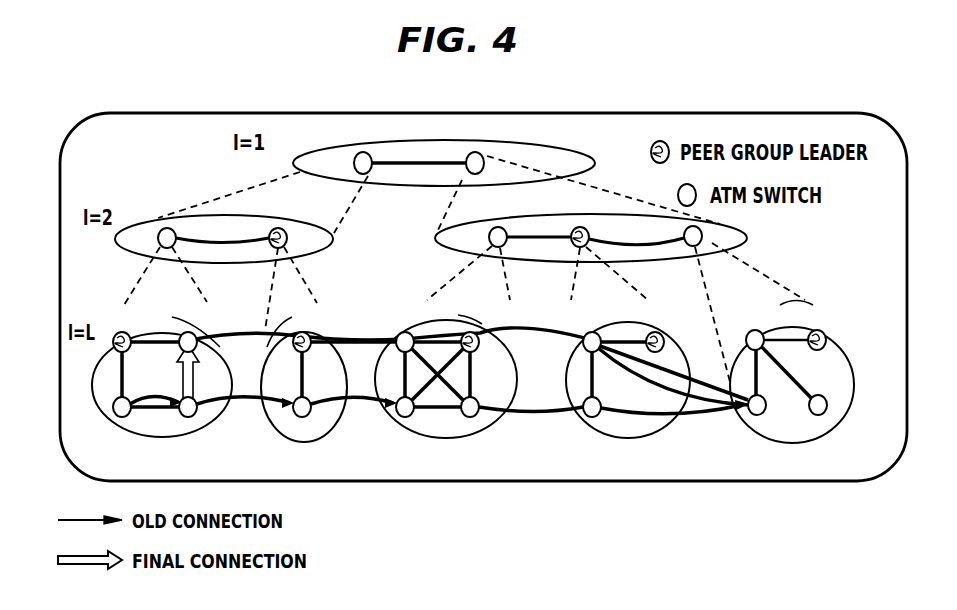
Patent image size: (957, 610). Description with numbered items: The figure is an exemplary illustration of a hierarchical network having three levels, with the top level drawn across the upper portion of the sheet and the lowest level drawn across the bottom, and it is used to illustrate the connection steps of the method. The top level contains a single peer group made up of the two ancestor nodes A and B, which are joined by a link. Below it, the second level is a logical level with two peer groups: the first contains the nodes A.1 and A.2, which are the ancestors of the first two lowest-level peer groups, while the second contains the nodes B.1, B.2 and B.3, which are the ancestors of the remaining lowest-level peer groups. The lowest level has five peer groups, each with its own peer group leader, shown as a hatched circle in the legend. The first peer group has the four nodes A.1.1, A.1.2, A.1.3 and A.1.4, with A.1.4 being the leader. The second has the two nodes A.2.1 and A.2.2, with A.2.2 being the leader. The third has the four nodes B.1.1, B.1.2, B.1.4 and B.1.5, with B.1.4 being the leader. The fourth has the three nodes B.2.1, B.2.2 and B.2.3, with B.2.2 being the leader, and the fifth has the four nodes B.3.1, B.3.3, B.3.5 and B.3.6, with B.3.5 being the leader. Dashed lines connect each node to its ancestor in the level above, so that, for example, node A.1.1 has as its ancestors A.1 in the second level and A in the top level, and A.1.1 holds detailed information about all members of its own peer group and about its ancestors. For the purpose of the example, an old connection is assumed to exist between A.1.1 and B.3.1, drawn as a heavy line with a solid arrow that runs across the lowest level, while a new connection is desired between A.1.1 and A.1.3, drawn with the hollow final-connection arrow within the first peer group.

The level 1 node A is at (363, 143).
The level 1 node B is at (475, 143).
The level 2 node A.1 is at (186, 235).
The level 2 node A.2 is at (258, 235).
The level 2 node B.1 is at (495, 220).
The level 2 node B.2 is at (572, 220).
The level 2 node B.3 is at (673, 233).
The node A.1.1 is at (101, 428).
The node A.1.2 is at (218, 428).
The node A.1.3 is at (211, 328).
The peer group leader A.1.4 is at (140, 328).
The node A.2.1 is at (321, 328).
The peer group leader A.2.2 is at (325, 428).
The node B.1.1 is at (394, 431).
The node B.1.2 is at (495, 431).
The peer group leader B.1.4 is at (499, 325).
The node B.1.5 is at (424, 325).
The node B.2.1 is at (619, 426).
The peer group leader B.2.2 is at (675, 326).
The node B.2.3 is at (605, 327).
The node B.3.1 is at (730, 426).
The node B.3.3 is at (852, 426).
The peer group leader B.3.5 is at (839, 326).
The node B.3.6 is at (773, 326).